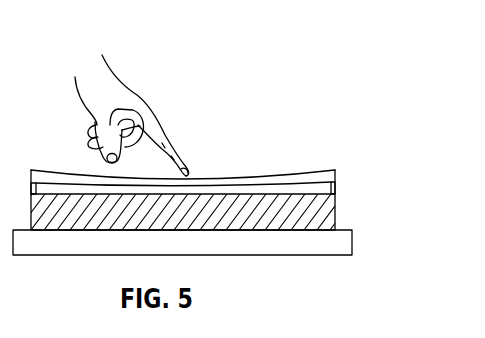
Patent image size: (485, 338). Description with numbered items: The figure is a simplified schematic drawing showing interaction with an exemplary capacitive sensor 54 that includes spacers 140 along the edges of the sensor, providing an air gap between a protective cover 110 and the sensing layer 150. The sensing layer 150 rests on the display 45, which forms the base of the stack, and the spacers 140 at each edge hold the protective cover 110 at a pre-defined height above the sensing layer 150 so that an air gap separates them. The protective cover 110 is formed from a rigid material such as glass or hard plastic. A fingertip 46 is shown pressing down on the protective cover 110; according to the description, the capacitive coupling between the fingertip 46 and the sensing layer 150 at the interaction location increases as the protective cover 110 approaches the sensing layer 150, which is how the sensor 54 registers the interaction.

The display 45 is at (218, 256).
The fingertip 46 is at (177, 143).
The sensor 54 is at (258, 92).
The protective cover 110 is at (219, 177).
The spacers 140 is at (31, 180).
The sensing layer 150 is at (336, 212).